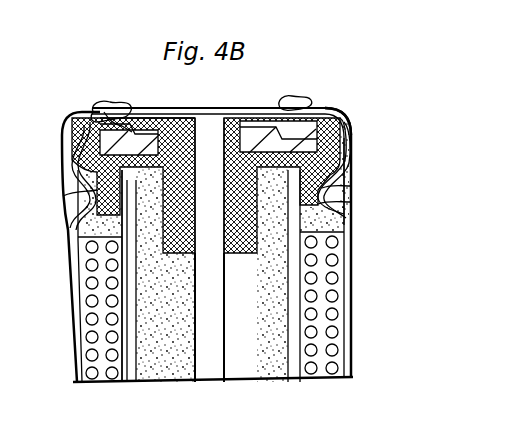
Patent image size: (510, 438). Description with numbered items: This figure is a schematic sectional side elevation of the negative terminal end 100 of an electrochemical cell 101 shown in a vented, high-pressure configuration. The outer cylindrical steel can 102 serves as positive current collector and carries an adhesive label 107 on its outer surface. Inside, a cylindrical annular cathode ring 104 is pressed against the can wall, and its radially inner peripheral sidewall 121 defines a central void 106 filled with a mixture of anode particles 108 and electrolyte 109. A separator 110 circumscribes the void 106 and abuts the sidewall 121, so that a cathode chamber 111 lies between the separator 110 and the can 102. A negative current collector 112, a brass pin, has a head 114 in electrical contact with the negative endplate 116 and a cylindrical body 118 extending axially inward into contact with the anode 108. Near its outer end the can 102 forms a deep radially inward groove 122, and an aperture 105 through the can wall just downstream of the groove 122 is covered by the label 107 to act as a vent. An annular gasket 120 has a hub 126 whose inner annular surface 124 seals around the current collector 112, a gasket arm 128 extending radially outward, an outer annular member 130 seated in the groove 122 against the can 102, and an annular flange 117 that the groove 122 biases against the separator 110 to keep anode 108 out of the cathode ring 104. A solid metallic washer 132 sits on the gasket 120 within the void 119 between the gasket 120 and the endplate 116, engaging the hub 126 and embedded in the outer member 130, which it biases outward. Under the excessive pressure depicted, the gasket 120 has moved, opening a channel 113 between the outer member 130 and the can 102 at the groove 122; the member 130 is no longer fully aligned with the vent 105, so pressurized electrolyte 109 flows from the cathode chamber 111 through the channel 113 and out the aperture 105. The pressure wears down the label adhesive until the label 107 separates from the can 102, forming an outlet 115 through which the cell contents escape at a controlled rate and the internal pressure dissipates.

The negative terminal end 100 is at (142, 104).
The electrochemical cell 101 is at (318, 70).
The can 102 is at (350, 258).
The cathode ring 104 is at (305, 300).
The aperture 105 is at (343, 151).
The void 106 is at (272, 319).
The label 107 is at (353, 168).
The anode particles 108 is at (258, 367).
The electrolyte 109 is at (276, 374).
The separator 110 is at (303, 338).
The cathode chamber 111 is at (325, 221).
The negative current collector 112 is at (192, 373).
The channel 113 is at (321, 190).
The head 114 is at (238, 113).
The outlet 115 is at (348, 128).
The negative endplate 116 is at (200, 108).
The annular flange 117 is at (319, 205).
The cylindrical body 118 is at (233, 378).
The void 119 is at (152, 120).
The gasket 120 is at (199, 154).
The radially inner peripheral sidewall 121 is at (313, 380).
The groove 122 is at (70, 206).
The inner annular surface 124 is at (218, 182).
The hub 126 is at (148, 243).
The gasket arm 128 is at (102, 114).
The outer annular member 130 is at (340, 112).
The metallic washer 132 is at (266, 107).